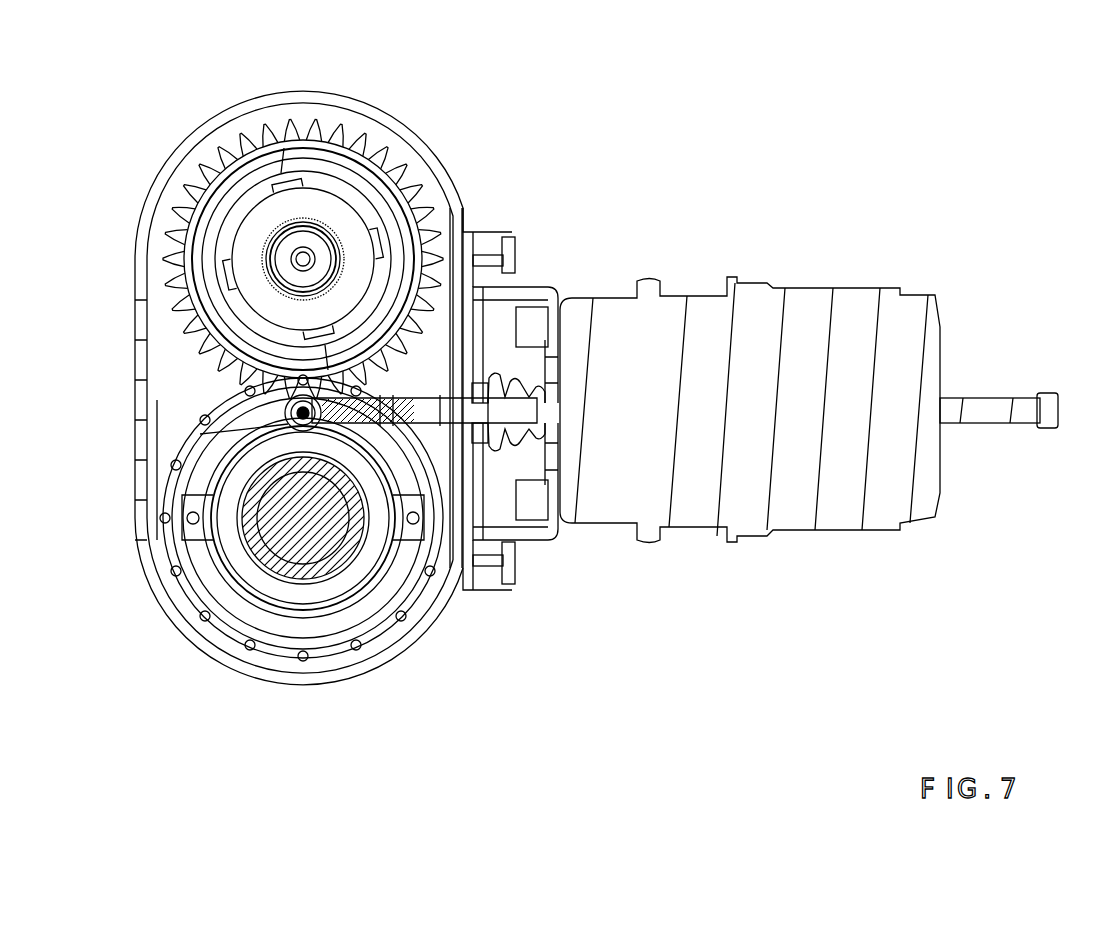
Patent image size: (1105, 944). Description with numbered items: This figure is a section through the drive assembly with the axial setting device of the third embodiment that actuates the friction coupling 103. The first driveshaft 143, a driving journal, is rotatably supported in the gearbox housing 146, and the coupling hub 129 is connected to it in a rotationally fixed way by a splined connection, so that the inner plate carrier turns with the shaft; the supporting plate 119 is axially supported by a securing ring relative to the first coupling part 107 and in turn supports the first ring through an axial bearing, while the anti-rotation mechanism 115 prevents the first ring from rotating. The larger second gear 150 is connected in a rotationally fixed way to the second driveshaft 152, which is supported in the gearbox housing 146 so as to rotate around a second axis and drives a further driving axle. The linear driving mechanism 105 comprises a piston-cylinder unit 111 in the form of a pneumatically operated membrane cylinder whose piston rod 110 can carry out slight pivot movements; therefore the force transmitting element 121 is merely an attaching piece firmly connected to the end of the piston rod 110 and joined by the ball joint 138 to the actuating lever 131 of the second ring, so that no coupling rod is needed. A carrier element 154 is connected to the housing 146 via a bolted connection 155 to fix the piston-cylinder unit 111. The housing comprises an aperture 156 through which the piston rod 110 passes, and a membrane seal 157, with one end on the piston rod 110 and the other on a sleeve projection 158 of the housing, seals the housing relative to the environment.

The friction coupling 103 is at (158, 478).
The linear driving mechanism 105 is at (692, 165).
The first coupling part 107 is at (312, 563).
The piston rod 110 is at (523, 400).
The piston-cylinder unit 111 is at (702, 318).
The anti-rotation mechanism 115 is at (178, 527).
The supporting plate 119 is at (247, 568).
The force transmitting element 121 is at (373, 400).
The coupling hub 129 is at (312, 592).
The actuating lever 131 is at (200, 434).
The ball joint 138 is at (285, 410).
The first driveshaft 143 is at (290, 560).
The gearbox housing 146 is at (432, 152).
The second gear 150 is at (257, 140).
The second driveshaft 152 is at (307, 242).
The carrier element 154 is at (522, 335).
The bolted connection 155 is at (486, 400).
The aperture 156 is at (493, 588).
The membrane seal 157 is at (524, 437).
The sleeve projection 158 is at (493, 305).